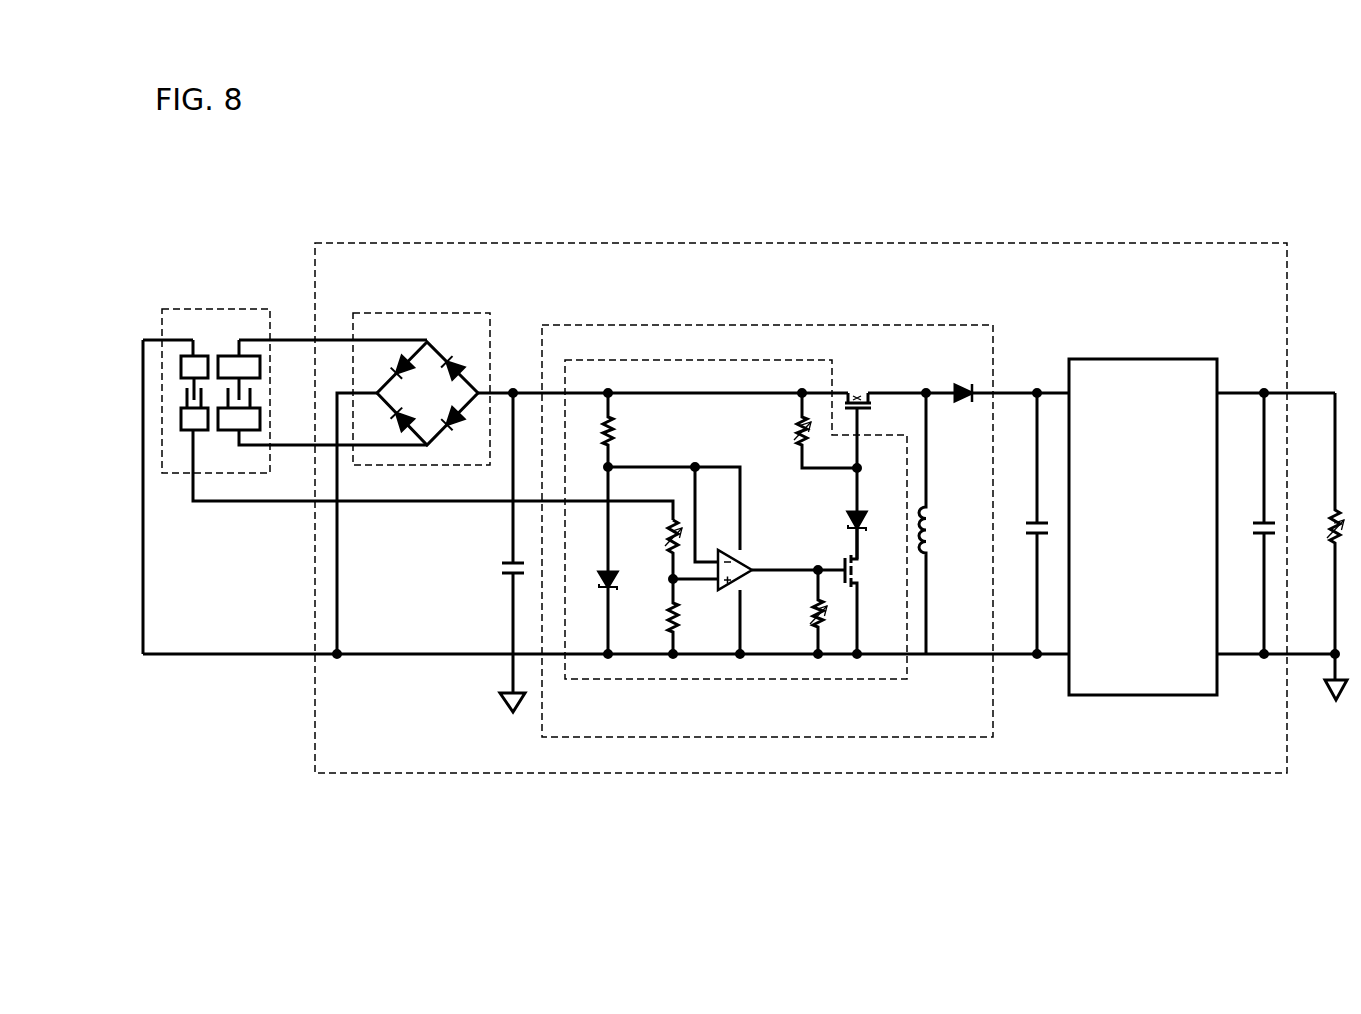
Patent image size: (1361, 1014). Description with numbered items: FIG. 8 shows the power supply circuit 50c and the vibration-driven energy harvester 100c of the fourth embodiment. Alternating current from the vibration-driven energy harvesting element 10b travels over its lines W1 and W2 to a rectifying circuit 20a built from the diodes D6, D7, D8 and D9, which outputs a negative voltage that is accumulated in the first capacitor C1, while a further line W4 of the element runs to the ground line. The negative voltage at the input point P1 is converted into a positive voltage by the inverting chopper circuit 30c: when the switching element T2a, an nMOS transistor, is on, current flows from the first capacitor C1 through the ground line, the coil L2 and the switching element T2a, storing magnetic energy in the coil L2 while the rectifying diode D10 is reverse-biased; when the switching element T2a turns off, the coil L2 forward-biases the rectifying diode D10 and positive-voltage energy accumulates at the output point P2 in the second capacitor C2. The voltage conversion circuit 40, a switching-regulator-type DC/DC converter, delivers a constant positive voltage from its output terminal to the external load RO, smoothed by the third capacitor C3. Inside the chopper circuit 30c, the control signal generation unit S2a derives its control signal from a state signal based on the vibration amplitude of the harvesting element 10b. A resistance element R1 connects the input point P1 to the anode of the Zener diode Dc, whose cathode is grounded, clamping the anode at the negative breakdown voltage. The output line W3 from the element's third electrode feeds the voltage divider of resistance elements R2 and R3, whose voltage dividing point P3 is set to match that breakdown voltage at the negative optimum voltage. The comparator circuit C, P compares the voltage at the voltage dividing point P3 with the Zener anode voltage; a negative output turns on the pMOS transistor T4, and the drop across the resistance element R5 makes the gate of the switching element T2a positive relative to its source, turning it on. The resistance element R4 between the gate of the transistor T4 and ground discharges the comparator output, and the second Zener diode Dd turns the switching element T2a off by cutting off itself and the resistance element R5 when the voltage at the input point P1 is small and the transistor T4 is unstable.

The vibration-driven energy harvester 100c is at (705, 193).
The power supply circuit 50c is at (868, 242).
The chopper circuit 30c is at (687, 325).
The control signal generation unit S2a is at (730, 680).
The vibration-driven energy harvesting element 10b is at (235, 307).
The rectifying circuit 20a is at (414, 458).
The voltage conversion circuit 40 is at (1113, 350).
The wire W1 is at (333, 431).
The wire W2 is at (333, 329).
The output line W3 is at (415, 475).
The wire W4 is at (158, 485).
The diode D6 is at (462, 434).
The diode D7 is at (466, 358).
The diode D8 is at (386, 426).
The diode D9 is at (386, 365).
The rectifying diode D10 is at (965, 380).
The input point P1 is at (518, 379).
The output point P2 is at (1028, 379).
The voltage dividing point P3 is at (679, 580).
The resistance element R1 is at (593, 430).
The resistance element R2 is at (658, 549).
The resistance element R3 is at (656, 616).
The resistance element R4 is at (802, 611).
The resistance element R5 is at (808, 429).
The first capacitor C1 is at (498, 552).
The second capacitor C2 is at (1025, 525).
The third capacitor C3 is at (1251, 524).
The Zener diode Dc is at (595, 560).
The second Zener diode Dd is at (840, 513).
The switching element T2a is at (865, 415).
The transistor T4 is at (870, 593).
The coil L2 is at (944, 522).
The comparator circuit C is at (748, 563).
The comparator circuit P is at (798, 551).
The external load RO is at (1318, 523).